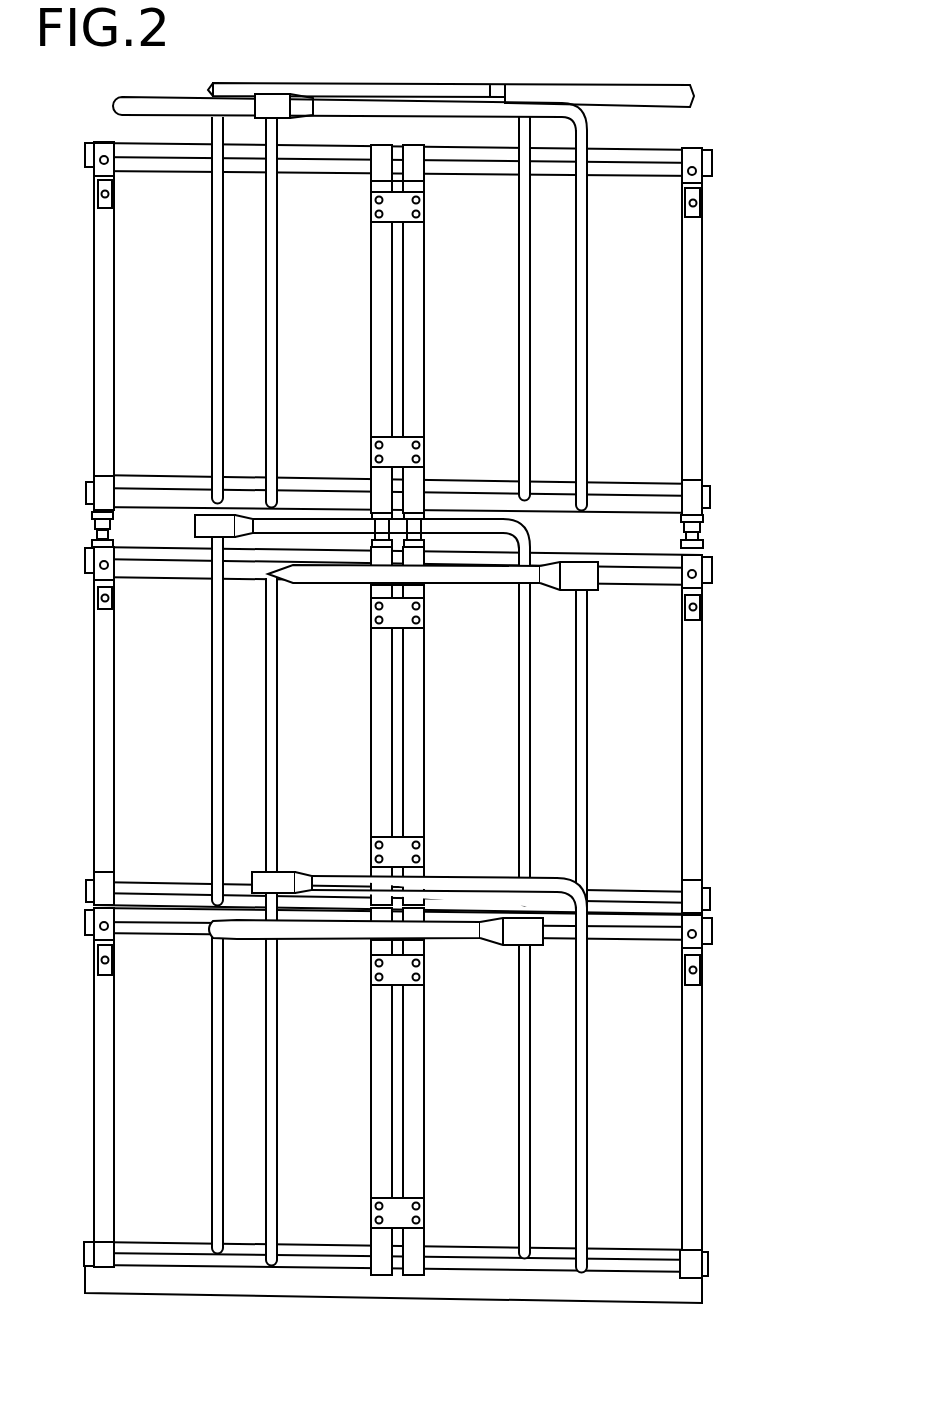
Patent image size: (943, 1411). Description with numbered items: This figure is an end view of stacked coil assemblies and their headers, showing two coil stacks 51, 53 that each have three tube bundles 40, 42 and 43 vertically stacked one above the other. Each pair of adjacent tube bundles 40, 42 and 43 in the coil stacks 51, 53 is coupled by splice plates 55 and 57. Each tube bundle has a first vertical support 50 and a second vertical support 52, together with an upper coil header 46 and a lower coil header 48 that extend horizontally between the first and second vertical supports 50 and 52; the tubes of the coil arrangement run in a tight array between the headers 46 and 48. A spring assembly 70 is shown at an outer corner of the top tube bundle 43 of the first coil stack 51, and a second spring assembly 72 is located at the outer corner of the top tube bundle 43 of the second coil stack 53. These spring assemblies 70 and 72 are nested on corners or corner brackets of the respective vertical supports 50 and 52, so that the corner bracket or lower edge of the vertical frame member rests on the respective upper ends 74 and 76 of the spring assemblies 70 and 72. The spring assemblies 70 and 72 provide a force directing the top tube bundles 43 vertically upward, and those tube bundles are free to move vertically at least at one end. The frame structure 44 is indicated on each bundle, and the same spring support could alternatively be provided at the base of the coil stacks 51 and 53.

The tube bundle 40 is at (718, 1057).
The tube bundle 42 is at (718, 751).
The tube bundle 43 is at (718, 357).
The module frame / left post 44 is at (88, 373).
The upper coil header 46 is at (163, 163).
The lower coil header 48 is at (145, 487).
The first vertical support 50 is at (103, 310).
The coil stack 51 is at (337, 144).
The second vertical support 52 is at (690, 308).
The coil stack 53 is at (638, 144).
The splice plate 55 is at (375, 202).
The splice plate 57 is at (375, 450).
The spring assembly 70 is at (85, 535).
The second spring assembly 72 is at (718, 546).
The upper end 74 is at (92, 514).
The upper end 76 is at (708, 523).